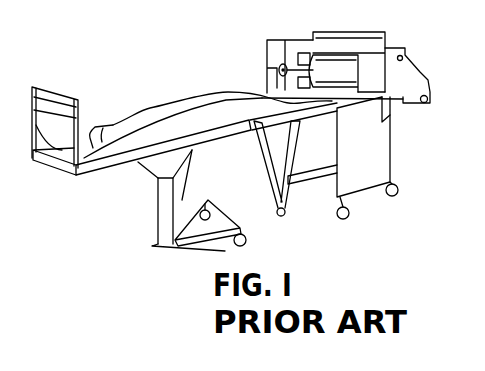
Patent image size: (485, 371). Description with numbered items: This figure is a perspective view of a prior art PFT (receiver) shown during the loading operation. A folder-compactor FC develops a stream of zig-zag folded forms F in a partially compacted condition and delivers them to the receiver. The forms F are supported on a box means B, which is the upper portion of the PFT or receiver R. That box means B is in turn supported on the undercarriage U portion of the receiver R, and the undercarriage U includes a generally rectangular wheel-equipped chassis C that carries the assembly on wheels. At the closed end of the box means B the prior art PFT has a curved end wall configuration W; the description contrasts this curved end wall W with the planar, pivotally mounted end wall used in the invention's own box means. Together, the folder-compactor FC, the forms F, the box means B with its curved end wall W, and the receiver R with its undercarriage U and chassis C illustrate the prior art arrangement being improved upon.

The folder-compactor FC is at (273, 52).
The forms F is at (183, 120).
The box means B is at (133, 150).
The curved end wall configuration W is at (62, 138).
The receiver R is at (155, 208).
The wheel-equipped chassis C is at (227, 213).
The undercarriage U is at (165, 248).